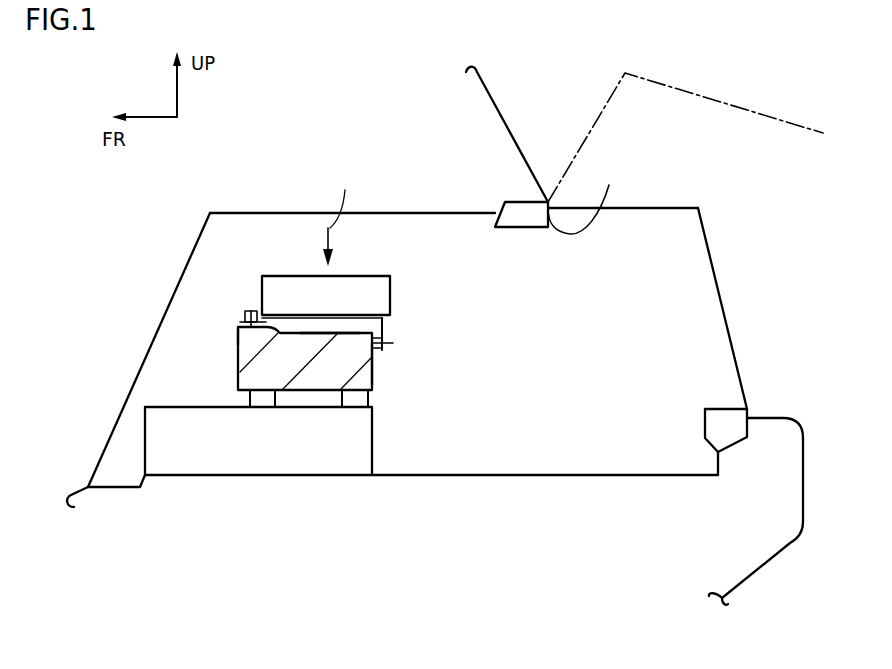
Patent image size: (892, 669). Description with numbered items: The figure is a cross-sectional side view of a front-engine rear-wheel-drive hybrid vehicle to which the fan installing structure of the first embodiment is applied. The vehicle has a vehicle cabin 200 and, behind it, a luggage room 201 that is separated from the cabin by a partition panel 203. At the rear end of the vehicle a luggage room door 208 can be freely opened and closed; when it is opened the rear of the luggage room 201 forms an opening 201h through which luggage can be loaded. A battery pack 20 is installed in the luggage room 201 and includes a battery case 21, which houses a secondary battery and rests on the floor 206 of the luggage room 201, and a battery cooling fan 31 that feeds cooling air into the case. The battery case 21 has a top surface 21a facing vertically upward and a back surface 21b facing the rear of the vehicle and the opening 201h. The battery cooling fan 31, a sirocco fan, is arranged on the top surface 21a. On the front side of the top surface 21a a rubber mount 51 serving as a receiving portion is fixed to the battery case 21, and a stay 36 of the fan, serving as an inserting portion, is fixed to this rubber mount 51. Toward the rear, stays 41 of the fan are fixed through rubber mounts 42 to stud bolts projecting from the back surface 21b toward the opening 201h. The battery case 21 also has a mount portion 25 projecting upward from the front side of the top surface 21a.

The battery pack 20 is at (399, 364).
The battery case 21 is at (238, 360).
The top surface 21a is at (350, 332).
The back surface 21b is at (373, 367).
The mount portion 25 is at (238, 332).
The battery cooling fan 31 is at (295, 290).
The stay 36 is at (258, 316).
The stay 41 is at (390, 322).
The rubber mount 42 is at (393, 343).
The rubber mount 51 is at (243, 313).
The vehicle cabin 200 is at (118, 347).
The luggage room 201 is at (658, 327).
The opening 201h is at (589, 197).
The partition panel 203 is at (183, 270).
The floor 206 is at (487, 475).
The luggage room door 208 is at (675, 208).